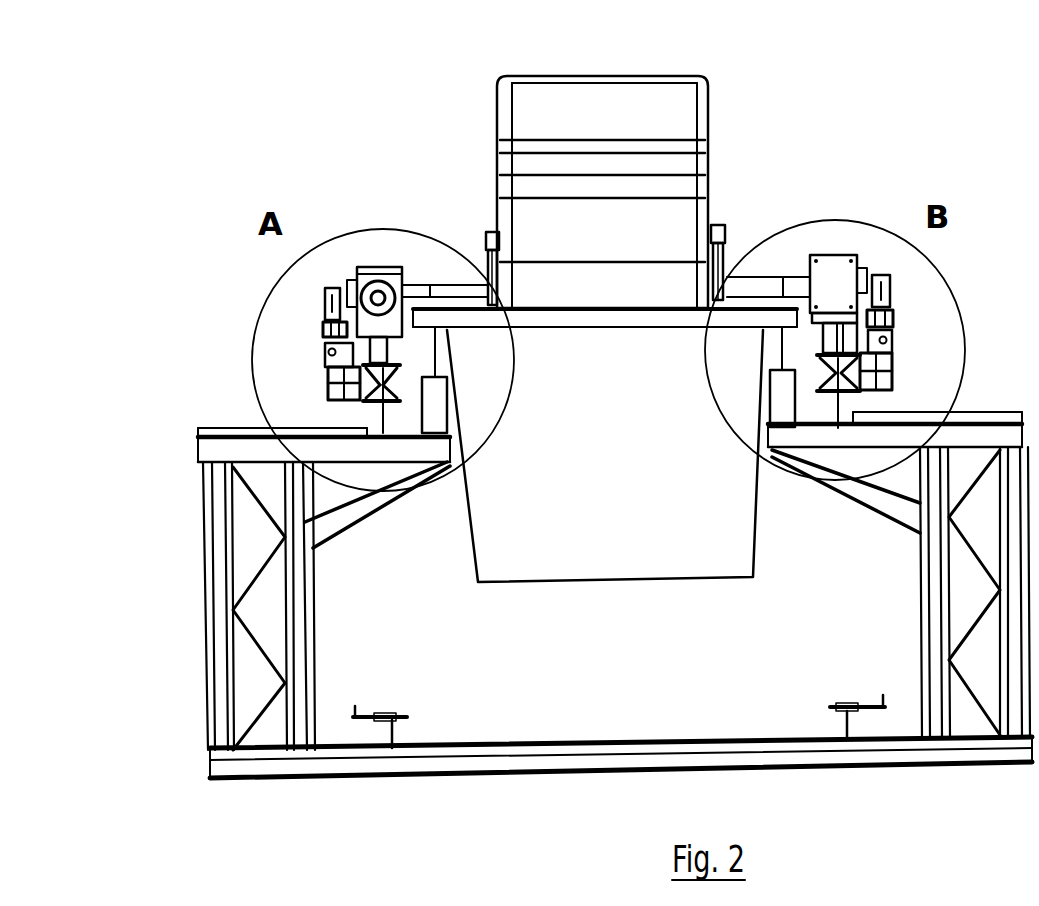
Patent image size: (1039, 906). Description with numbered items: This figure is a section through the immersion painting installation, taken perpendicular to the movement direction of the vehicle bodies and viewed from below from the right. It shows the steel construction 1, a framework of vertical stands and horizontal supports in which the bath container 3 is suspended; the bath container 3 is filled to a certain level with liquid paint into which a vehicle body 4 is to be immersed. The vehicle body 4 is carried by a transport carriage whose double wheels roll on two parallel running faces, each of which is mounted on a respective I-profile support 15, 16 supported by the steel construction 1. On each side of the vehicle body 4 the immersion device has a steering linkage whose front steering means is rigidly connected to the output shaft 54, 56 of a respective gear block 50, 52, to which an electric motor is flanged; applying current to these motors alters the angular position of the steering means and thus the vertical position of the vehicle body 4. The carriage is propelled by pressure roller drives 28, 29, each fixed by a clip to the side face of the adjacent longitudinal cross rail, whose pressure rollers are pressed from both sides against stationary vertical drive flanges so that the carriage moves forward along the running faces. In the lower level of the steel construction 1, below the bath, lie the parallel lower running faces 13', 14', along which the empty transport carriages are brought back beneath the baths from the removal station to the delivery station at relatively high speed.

The steel construction 1 is at (208, 642).
The bath container 3 is at (622, 503).
The vehicle body 4 is at (593, 133).
The lower running face 13' is at (396, 770).
The lower running face 14' is at (839, 760).
The I-profile support 15 is at (383, 403).
The I-profile support 16 is at (862, 393).
The pressure roller drive 28 is at (308, 310).
The pressure roller drive 29 is at (902, 294).
The gear block 50 is at (367, 267).
The gear block 52 is at (828, 255).
The output shaft 54 is at (483, 290).
The output shaft 56 is at (740, 278).